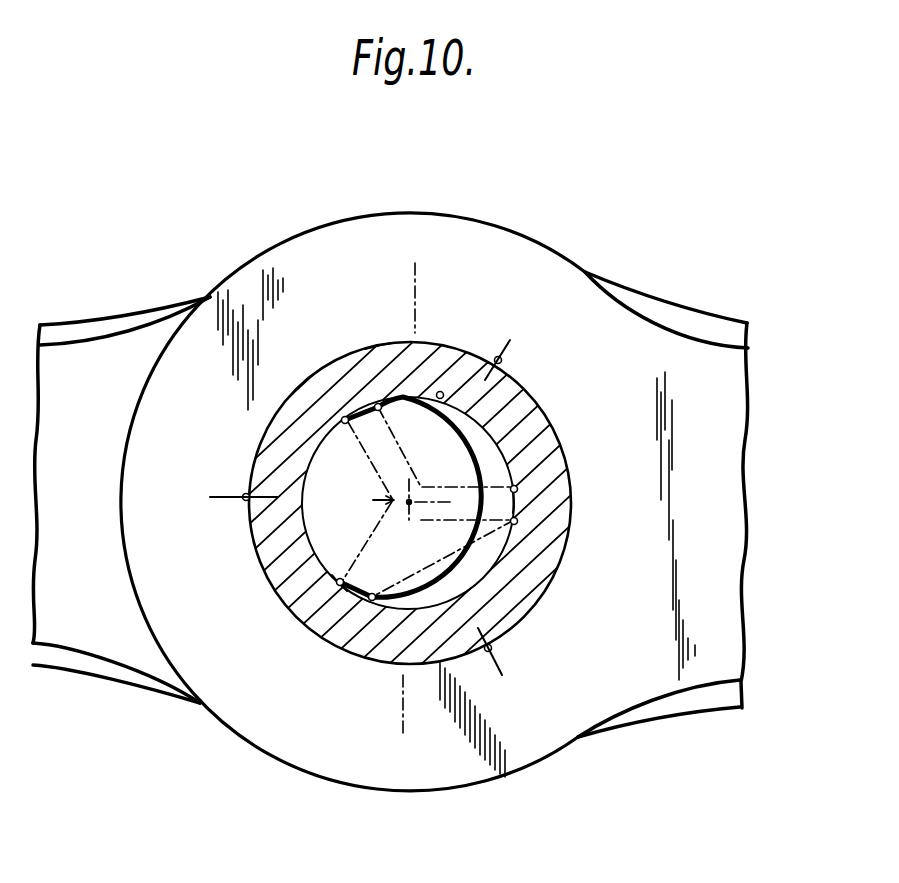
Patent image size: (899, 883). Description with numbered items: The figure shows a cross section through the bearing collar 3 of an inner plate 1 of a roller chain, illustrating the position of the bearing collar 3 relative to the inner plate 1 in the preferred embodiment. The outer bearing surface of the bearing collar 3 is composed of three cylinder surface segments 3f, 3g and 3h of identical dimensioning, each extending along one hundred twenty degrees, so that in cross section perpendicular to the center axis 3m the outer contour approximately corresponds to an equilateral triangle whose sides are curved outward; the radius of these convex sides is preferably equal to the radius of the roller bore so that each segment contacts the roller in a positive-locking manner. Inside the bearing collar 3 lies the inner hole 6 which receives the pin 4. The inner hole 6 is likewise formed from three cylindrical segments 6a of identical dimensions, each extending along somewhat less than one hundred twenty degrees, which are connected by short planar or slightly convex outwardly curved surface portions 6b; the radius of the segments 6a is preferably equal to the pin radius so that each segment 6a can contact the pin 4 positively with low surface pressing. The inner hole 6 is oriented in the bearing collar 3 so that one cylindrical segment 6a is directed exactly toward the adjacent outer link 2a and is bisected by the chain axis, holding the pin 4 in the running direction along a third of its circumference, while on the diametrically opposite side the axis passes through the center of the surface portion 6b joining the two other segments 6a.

The inner plate 1 is at (722, 373).
The adjacent outer link 2a is at (95, 633).
The bearing collar 3 is at (525, 428).
The cylinder surface segment 3f is at (518, 502).
The cylinder surface segment 3g is at (340, 588).
The cylinder surface segment 3h is at (377, 346).
The center axis 3m is at (419, 489).
The pin 4 is at (328, 530).
The inner hole 6 is at (485, 547).
The cylindrical segment 6a is at (441, 392).
The surface portion 6b is at (344, 418).